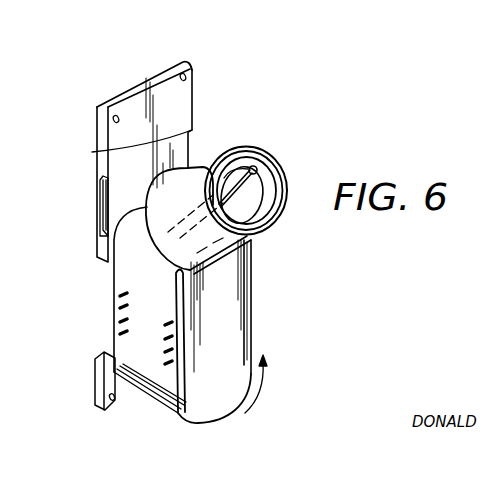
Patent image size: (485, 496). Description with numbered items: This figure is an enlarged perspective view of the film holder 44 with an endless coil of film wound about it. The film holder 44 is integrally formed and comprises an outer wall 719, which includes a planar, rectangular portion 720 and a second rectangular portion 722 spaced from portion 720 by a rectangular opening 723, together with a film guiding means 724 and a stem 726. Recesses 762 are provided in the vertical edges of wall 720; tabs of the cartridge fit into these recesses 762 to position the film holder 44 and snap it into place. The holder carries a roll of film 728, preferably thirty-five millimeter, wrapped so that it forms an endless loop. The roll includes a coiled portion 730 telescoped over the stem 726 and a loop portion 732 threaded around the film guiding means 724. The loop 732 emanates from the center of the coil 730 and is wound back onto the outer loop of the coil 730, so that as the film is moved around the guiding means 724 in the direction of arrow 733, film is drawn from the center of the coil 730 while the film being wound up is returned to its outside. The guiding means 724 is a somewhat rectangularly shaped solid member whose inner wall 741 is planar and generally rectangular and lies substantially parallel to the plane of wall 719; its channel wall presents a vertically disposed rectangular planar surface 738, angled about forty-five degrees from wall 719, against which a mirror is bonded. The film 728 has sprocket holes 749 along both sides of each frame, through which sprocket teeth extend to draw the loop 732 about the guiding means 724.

The film holder 44 is at (199, 85).
The planar rectangular portion of outer wall 720 is at (142, 82).
The outer wall 719 is at (97, 118).
The recess 762 is at (106, 175).
The film guiding means 724 is at (242, 312).
The loop portion 732 is at (147, 282).
The inner wall 741 is at (243, 273).
The second rectangular portion of outer wall 722 is at (126, 393).
The rectangular planar surface 738 is at (220, 412).
The arrow 733 is at (267, 373).
The sprocket holes 749 is at (167, 331).
The rectangular opening 723 is at (102, 356).
The roll of film 728 is at (253, 238).
The coiled portion 730 is at (284, 176).
The stem 726 is at (257, 169).